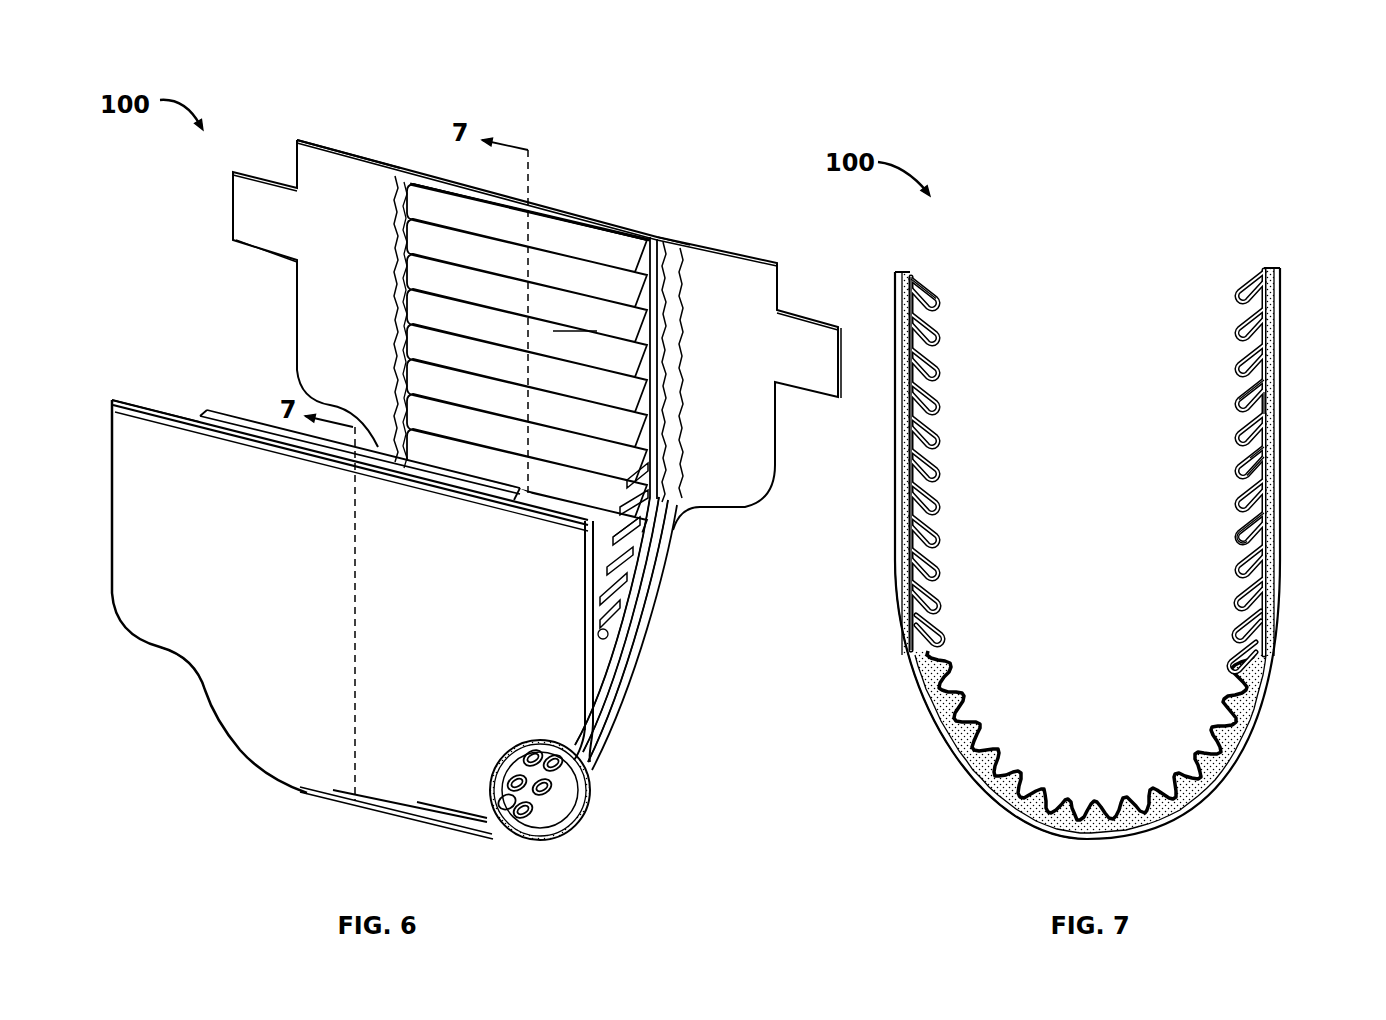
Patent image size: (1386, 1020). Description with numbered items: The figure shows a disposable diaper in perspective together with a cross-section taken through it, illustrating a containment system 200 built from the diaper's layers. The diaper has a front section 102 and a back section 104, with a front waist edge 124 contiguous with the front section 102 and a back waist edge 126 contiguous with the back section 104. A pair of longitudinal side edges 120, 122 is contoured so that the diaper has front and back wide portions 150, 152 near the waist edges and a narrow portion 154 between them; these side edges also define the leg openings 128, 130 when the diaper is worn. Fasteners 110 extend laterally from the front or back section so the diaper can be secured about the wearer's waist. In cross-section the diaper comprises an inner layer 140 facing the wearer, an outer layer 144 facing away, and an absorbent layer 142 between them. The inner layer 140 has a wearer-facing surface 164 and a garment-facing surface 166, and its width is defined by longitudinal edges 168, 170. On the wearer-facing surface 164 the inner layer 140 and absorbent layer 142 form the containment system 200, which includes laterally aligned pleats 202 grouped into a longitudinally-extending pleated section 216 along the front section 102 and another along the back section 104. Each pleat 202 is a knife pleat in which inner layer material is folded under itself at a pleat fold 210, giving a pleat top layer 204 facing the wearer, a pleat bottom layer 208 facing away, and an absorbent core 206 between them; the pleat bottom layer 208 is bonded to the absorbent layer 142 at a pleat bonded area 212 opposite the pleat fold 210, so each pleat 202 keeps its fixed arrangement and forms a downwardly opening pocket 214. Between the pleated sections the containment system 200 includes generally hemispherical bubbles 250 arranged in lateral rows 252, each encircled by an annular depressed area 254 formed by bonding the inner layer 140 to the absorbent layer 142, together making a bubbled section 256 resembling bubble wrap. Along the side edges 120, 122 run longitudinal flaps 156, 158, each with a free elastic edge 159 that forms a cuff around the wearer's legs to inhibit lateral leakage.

In FIG. 6, the front section 102 is at (110, 445).
In FIG. 7, the front section 102 is at (1280, 307).
In FIG. 6, the back section 104 is at (297, 320).
In FIG. 7, the back section 104 is at (895, 293).
In FIG. 6, the fastener 110 is at (237, 242).
In FIG. 6, the longitudinal side edge 120 is at (623, 667).
In FIG. 6, the longitudinal side edge 122 is at (110, 557).
In FIG. 6, the front waist edge 124 is at (113, 396).
In FIG. 7, the front waist edge 124 is at (1273, 270).
In FIG. 6, the back waist edge 126 is at (297, 140).
In FIG. 7, the back waist edge 126 is at (900, 272).
In FIG. 6, the leg opening 128 is at (210, 700).
In FIG. 6, the leg opening 130 is at (603, 710).
In FIG. 6, the inner layer 140 is at (613, 577).
In FIG. 7, the absorbent layer 142 is at (900, 602).
In FIG. 6, the outer layer 144 is at (470, 825).
In FIG. 7, the outer layer 144 is at (900, 640).
In FIG. 6, the front wide portion 150 is at (783, 478).
In FIG. 6, the back wide portion 152 is at (97, 495).
In FIG. 6, the narrow portion 154 is at (617, 717).
In FIG. 6, the longitudinal flap 156 is at (400, 172).
In FIG. 6, the longitudinal flap 158 is at (680, 263).
In FIG. 6, the free elastic edge 159 is at (385, 210).
In FIG. 6, the wearer-facing surface 164 is at (528, 411).
In FIG. 7, the wearer-facing surface 164 is at (940, 523).
In FIG. 7, the garment-facing surface 166 is at (908, 528).
In FIG. 6, the longitudinal edge 168 is at (400, 175).
In FIG. 6, the longitudinal edge 170 is at (657, 237).
In FIG. 6, the containment system 200 is at (680, 537).
In FIG. 7, the containment system 200 is at (993, 342).
In FIG. 6, the pleat 202 is at (647, 537).
In FIG. 7, the pleat 202 is at (933, 363).
In FIG. 7, the pleat top layer 204 is at (1247, 390).
In FIG. 7, the absorbent core 206 is at (1253, 510).
In FIG. 7, the pleat bottom layer 208 is at (1263, 397).
In FIG. 7, the pleat fold 210 is at (1253, 533).
In FIG. 7, the pleat bonded area 212 is at (1263, 447).
In FIG. 7, the downwardly opening pocket 214 is at (1263, 457).
In FIG. 6, the pleated section 216 is at (590, 247).
In FIG. 7, the pleated section 216 is at (937, 312).
In FIG. 6, the bubble 250 is at (560, 770).
In FIG. 7, the bubble 250 is at (950, 674).
In FIG. 7, the lateral row 252 is at (1013, 803).
In FIG. 6, the depressed area 254 is at (548, 807).
In FIG. 7, the depressed area 254 is at (950, 702).
In FIG. 6, the bubbled section 256 is at (547, 847).
In FIG. 7, the bubbled section 256 is at (1092, 780).